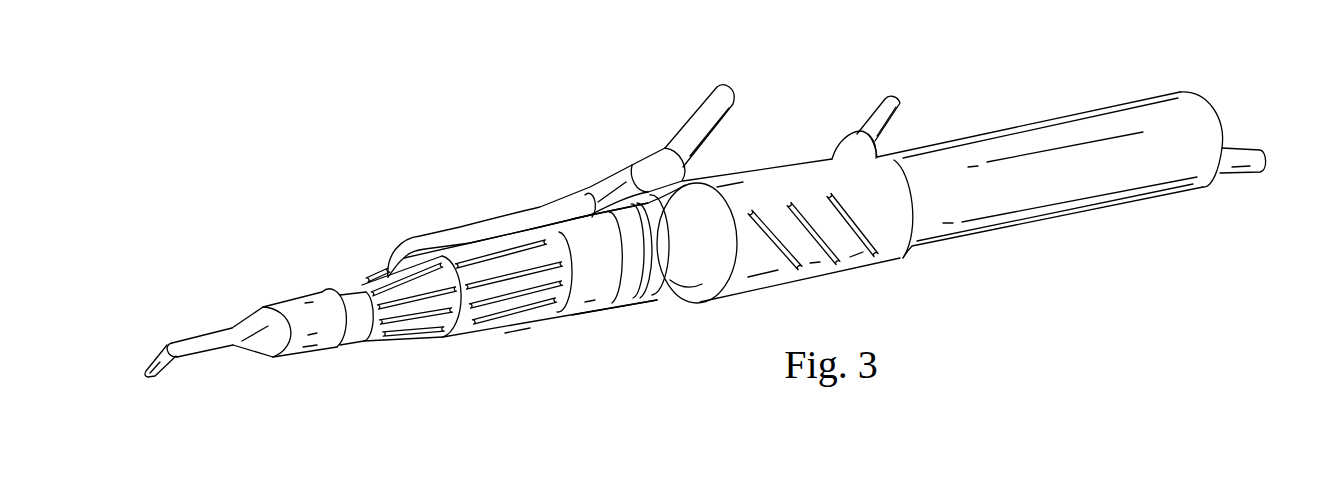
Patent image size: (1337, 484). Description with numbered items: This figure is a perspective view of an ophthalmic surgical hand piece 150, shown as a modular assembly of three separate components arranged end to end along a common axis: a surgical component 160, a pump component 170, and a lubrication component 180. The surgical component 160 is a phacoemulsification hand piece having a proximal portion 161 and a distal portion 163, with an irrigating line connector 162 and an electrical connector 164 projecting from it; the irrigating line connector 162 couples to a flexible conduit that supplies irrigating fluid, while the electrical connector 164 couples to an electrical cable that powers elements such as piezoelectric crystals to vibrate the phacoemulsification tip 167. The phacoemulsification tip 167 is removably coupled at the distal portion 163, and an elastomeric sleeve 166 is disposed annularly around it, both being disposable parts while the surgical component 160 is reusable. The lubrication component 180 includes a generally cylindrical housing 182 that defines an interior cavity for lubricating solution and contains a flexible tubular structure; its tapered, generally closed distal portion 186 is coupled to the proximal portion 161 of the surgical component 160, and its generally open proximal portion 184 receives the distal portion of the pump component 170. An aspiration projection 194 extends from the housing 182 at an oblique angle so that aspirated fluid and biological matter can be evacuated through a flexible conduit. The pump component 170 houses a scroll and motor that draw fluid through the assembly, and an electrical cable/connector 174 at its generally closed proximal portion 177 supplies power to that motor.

The surgical hand piece 150 is at (502, 104).
The surgical component 160 is at (513, 353).
The proximal portion 161 is at (656, 304).
The irrigating line connector 162 is at (607, 183).
The distal portion 163 is at (340, 292).
The electrical connector 164 is at (672, 126).
The elastomeric sleeve 166 is at (247, 312).
The phacoemulsification tip 167 is at (160, 350).
The pump component 170 is at (1115, 224).
The electrical cable/connector 174 is at (1240, 146).
The proximal portion 177 is at (1184, 90).
The lubrication component 180 is at (810, 141).
The housing 182 is at (752, 168).
The proximal portion 184 is at (901, 258).
The distal portion 186 is at (682, 302).
The aspiration projection 194 is at (871, 113).